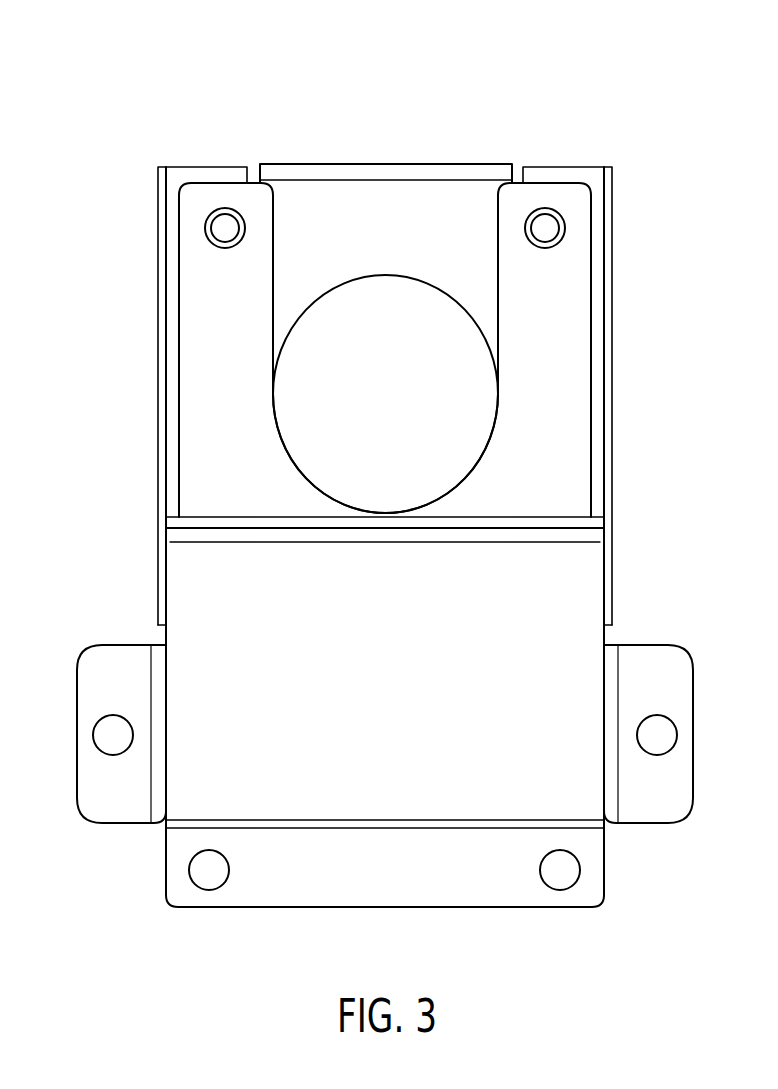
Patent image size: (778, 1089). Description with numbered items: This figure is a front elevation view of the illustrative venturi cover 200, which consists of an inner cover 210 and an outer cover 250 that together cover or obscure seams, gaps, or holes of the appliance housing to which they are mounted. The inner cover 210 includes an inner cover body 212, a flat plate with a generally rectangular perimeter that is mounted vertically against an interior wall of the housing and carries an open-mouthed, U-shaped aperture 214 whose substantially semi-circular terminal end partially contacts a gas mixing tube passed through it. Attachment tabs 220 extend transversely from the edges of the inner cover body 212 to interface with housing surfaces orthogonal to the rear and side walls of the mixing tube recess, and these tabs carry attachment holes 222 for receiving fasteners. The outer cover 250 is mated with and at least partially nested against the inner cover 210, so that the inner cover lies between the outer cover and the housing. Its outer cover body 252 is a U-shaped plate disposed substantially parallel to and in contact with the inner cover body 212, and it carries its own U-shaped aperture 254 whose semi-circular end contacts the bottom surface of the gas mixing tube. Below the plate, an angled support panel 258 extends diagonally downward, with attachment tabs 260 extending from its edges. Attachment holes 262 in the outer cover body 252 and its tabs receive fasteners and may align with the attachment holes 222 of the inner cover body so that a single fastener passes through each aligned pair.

The venturi cover 200 is at (586, 87).
The inner cover 210 is at (585, 165).
The inner cover body 212 is at (467, 192).
The aperture 214 is at (453, 297).
The attachment tabs 220 is at (93, 792).
The attachment holes 222 is at (95, 733).
The outer cover 250 is at (500, 910).
The outer cover body 252 is at (580, 397).
The aperture 254 is at (483, 465).
The angled support panel 258 is at (580, 590).
The attachment tabs 260 is at (290, 893).
The attachment holes 262 is at (565, 228).